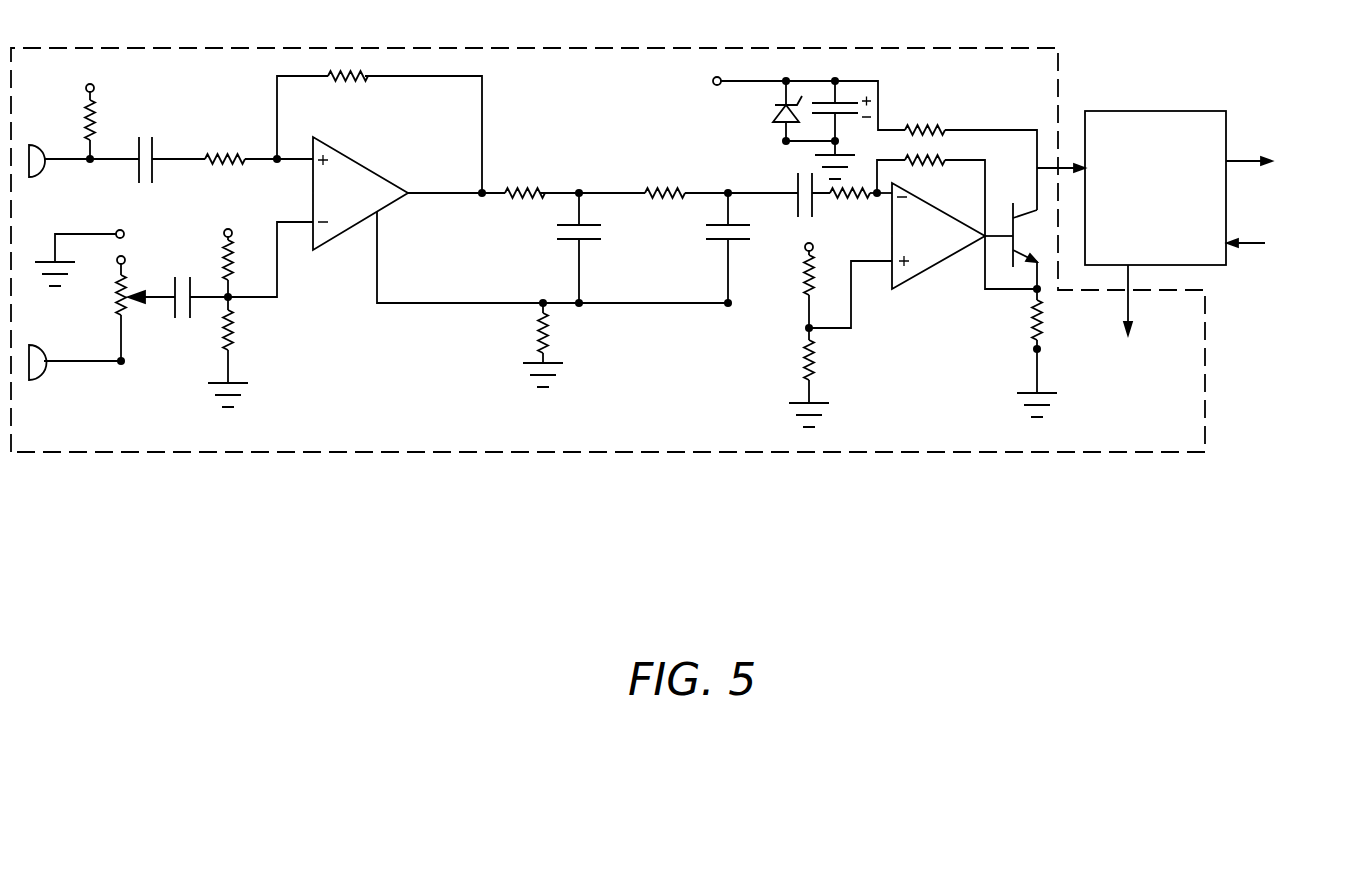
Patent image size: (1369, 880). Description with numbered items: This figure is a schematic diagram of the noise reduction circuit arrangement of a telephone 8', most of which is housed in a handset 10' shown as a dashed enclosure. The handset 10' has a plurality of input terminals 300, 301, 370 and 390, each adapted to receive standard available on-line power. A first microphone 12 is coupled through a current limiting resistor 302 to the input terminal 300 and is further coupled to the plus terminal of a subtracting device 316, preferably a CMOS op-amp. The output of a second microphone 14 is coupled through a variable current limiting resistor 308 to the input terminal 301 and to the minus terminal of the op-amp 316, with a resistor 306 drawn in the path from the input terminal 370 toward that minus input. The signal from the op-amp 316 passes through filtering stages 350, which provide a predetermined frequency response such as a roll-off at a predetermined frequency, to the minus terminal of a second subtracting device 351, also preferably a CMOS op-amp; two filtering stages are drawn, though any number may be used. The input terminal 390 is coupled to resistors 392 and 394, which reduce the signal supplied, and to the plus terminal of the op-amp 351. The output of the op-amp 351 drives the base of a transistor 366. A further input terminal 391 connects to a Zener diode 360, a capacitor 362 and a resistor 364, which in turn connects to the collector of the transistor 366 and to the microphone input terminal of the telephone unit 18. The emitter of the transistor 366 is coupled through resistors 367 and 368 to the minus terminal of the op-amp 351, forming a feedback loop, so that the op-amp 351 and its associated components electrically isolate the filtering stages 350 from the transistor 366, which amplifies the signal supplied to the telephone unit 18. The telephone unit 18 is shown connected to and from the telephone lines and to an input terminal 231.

The first microphone 12 is at (40, 148).
The second microphone 14 is at (36, 372).
The input terminal 300 is at (94, 90).
The current limiting resistor 302 is at (94, 123).
The input terminal 301 is at (143, 221).
The variable current limiting resistor 308 is at (117, 285).
The input terminal 370 is at (224, 233).
The resistor 306 is at (232, 330).
The subtracting device 316 is at (317, 246).
The filtering stages 350 is at (665, 152).
The input terminal 391 is at (714, 81).
The Zener diode 360 is at (776, 112).
The capacitor 362 is at (850, 118).
The resistor 364 is at (910, 129).
The resistor 368 is at (928, 163).
The transistor 366 is at (1012, 223).
The subtracting device 351 is at (900, 283).
The input terminal 390 is at (805, 249).
The resistor 392 is at (807, 297).
The resistor 394 is at (806, 367).
The resistor 367 is at (1034, 318).
The telephone unit 18 is at (1160, 222).
The input terminal 231 is at (1136, 345).
The handset 10' is at (234, 487).
The telephone 8' is at (440, 580).